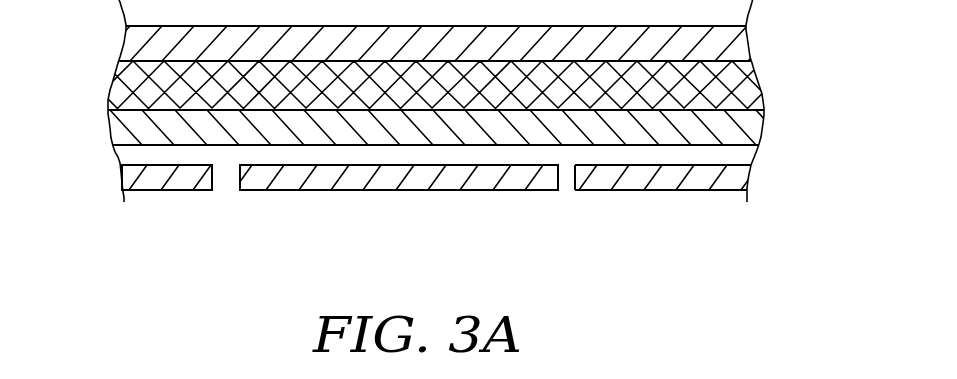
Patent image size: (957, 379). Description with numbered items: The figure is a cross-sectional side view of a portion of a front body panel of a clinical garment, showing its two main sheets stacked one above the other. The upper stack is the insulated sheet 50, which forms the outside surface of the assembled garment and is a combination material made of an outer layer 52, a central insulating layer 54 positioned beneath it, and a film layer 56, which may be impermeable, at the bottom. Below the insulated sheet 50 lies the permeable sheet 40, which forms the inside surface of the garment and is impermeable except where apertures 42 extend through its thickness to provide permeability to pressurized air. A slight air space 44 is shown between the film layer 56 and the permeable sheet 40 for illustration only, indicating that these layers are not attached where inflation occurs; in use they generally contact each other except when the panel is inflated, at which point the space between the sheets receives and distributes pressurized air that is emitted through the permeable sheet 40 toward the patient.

The permeable sheet 40 is at (100, 162).
The apertures 42 is at (227, 183).
The air space 44 is at (322, 192).
The insulated sheet 50 is at (100, 27).
The outer layer 52 is at (738, 47).
The central insulating layer 54 is at (750, 88).
The film layer 56 is at (750, 125).